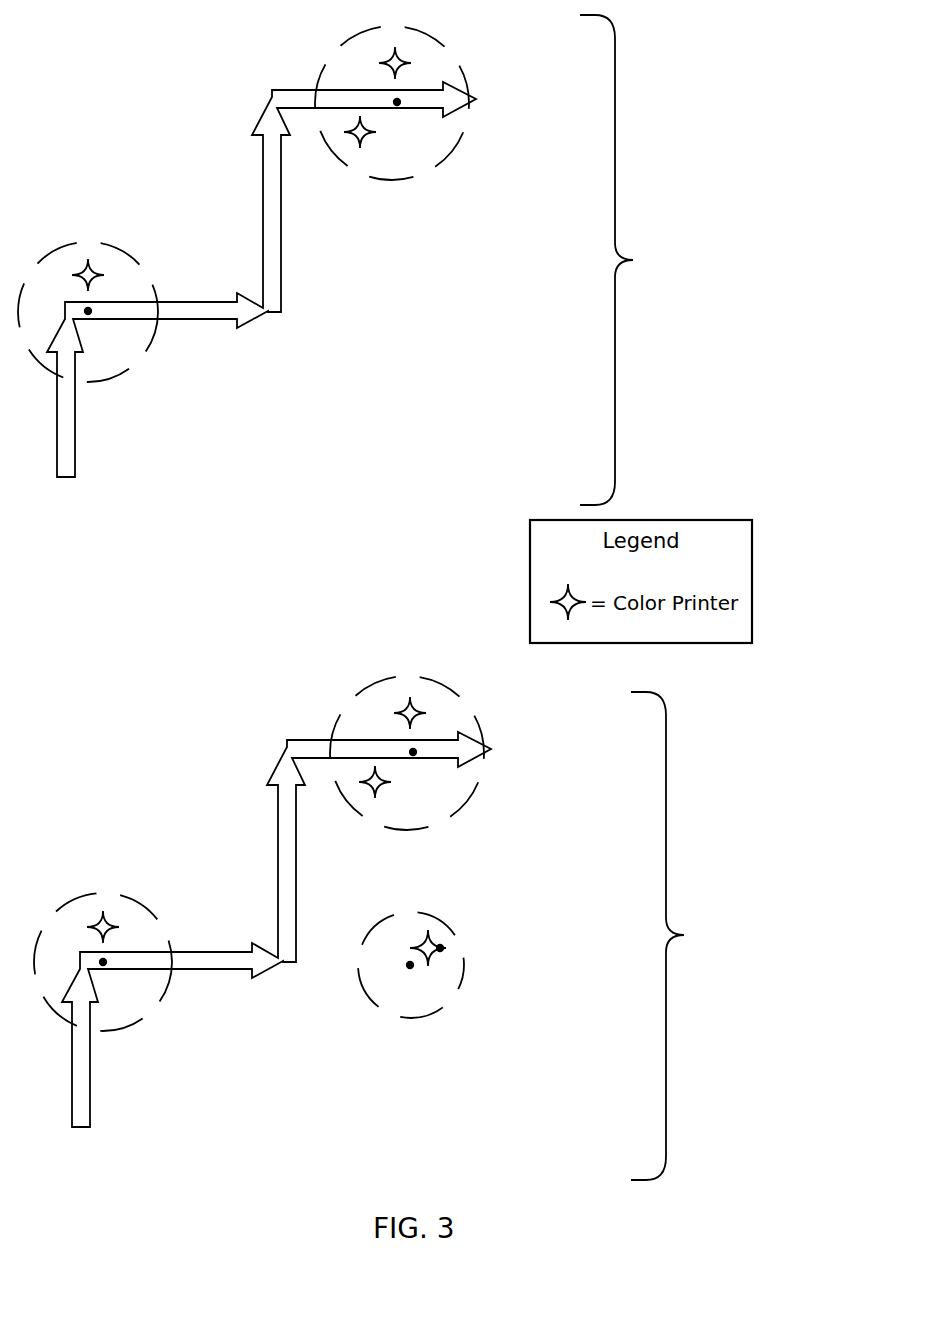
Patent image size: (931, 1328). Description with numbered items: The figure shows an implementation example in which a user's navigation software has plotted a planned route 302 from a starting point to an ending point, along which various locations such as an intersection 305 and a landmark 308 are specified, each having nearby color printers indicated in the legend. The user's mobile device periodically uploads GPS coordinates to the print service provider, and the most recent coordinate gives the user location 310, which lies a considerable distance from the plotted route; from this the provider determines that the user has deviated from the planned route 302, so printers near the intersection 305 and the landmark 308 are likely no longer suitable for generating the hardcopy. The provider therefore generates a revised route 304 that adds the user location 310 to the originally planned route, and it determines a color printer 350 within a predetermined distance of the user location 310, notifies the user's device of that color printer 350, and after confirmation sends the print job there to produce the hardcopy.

The planned route 302 is at (425, 260).
The revised route 304 is at (456, 936).
The intersection 305 is at (92, 315).
The landmark 308 is at (403, 107).
The user location 310 is at (414, 968).
The color printer 350 is at (440, 948).